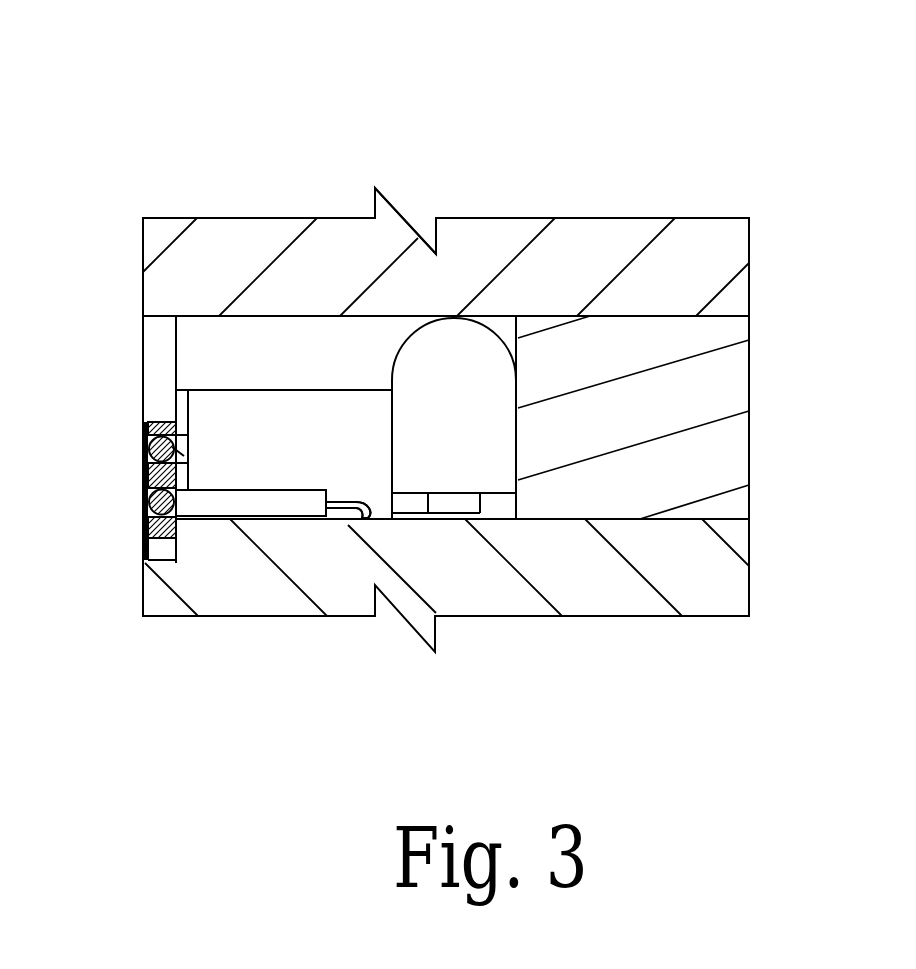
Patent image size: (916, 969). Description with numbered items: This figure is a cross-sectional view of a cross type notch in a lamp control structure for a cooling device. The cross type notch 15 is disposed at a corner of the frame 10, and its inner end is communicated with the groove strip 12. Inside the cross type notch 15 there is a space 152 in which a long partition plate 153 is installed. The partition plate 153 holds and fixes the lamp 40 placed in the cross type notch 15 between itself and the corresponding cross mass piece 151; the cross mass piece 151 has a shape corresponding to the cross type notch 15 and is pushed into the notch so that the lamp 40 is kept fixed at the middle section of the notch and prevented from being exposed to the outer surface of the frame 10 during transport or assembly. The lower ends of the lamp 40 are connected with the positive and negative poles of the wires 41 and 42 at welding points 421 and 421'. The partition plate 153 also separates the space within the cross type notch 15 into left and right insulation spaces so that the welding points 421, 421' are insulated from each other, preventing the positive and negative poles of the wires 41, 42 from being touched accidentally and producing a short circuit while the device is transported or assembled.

The frame 10 is at (783, 215).
The cross type notch 15 is at (260, 353).
The cross mass piece 151 is at (737, 414).
The space 152 is at (330, 357).
The partition plate 153 is at (247, 430).
The groove strip 12 is at (145, 420).
The lamp 40 is at (468, 352).
The wire 41 is at (143, 455).
The wire 42 is at (242, 500).
The welding point 421 is at (298, 597).
The welding point 421' is at (359, 597).